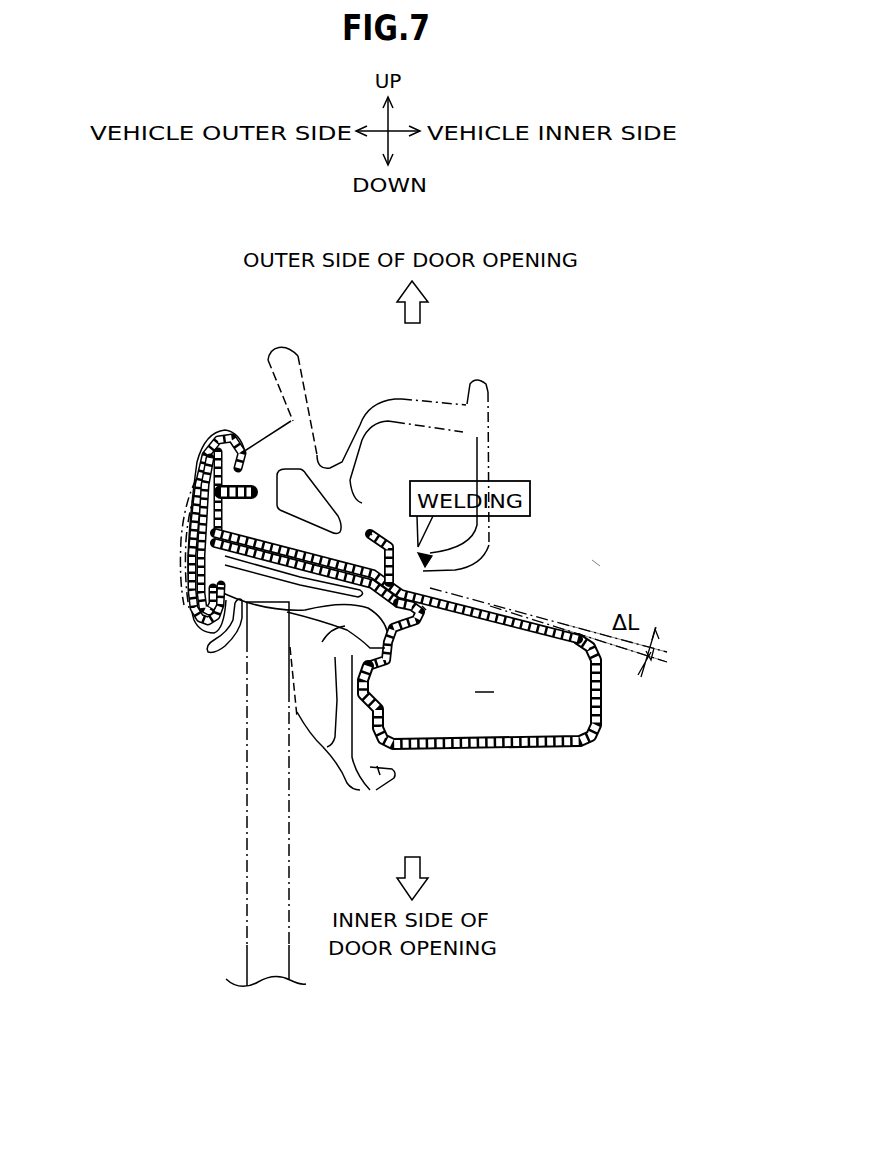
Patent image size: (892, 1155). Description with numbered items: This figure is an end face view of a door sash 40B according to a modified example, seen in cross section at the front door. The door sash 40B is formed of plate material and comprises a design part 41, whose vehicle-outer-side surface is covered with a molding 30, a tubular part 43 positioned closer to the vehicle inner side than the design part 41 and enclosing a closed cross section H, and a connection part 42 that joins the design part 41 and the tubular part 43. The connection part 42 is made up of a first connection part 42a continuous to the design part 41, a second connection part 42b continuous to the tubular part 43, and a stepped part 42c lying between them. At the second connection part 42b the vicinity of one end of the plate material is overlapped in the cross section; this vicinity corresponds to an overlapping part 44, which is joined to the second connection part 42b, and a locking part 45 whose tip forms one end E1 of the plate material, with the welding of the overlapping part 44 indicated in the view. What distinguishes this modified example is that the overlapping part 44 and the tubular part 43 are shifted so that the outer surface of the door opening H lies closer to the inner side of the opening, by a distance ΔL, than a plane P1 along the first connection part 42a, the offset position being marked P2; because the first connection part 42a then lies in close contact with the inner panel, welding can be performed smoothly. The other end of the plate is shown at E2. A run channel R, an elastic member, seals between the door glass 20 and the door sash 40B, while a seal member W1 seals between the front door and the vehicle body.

The door glass 20 is at (247, 888).
The molding 30 is at (178, 560).
The door sash 40B is at (600, 562).
The design part 41 is at (213, 628).
The connection part 42 is at (290, 538).
The first connection part 42a is at (216, 569).
The second connection part 42b is at (404, 639).
The stepped part 42c is at (293, 650).
The tubular part 43 is at (506, 749).
The overlapping part 44 is at (432, 583).
The locking part 45 is at (396, 545).
The one end of the plate material E1 is at (372, 529).
The end of first plate E2 is at (431, 612).
The seal member W1 is at (491, 456).
The closed cross section H is at (484, 680).
The run channel R is at (363, 790).
The plane along the first connection part P1 is at (629, 642).
The second position P2 is at (627, 657).